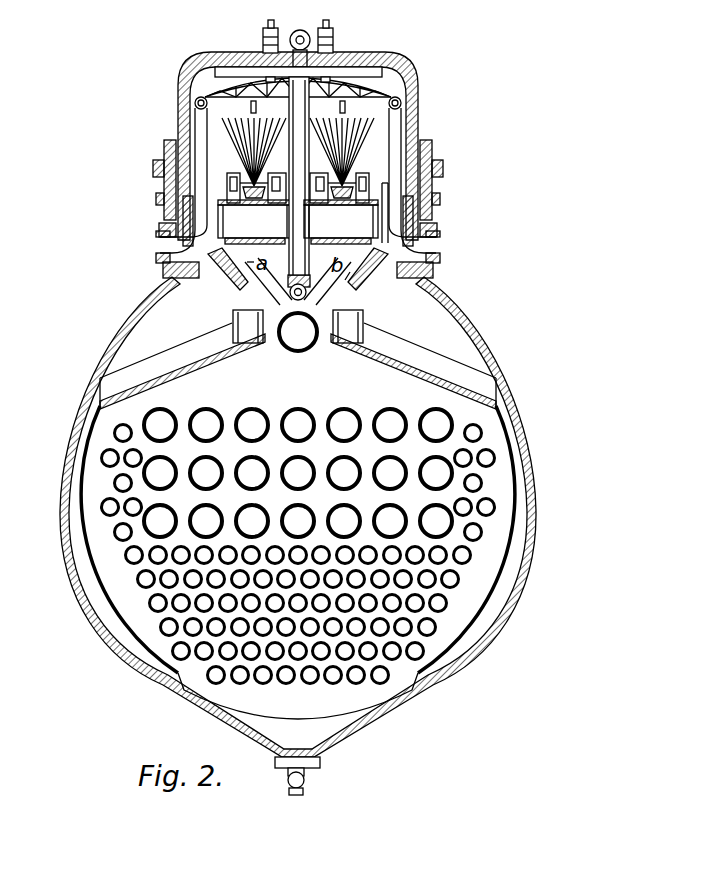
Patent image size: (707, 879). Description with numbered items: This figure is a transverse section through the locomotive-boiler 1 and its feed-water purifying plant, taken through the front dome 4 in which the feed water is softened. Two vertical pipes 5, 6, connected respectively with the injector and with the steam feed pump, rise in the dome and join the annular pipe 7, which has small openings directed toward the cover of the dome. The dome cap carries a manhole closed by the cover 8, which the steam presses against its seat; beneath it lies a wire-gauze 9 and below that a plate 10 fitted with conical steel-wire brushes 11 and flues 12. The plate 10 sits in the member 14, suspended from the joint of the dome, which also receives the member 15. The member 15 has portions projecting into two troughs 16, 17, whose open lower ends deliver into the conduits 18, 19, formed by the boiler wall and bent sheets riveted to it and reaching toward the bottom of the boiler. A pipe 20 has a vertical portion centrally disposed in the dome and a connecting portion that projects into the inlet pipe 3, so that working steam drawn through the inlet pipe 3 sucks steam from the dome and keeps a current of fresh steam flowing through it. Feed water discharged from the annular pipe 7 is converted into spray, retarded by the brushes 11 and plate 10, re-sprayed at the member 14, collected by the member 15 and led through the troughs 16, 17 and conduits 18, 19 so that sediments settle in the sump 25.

The locomotive-boiler 1 is at (478, 346).
The inlet pipe 3 is at (304, 351).
The front dome 4 is at (440, 170).
The vertical pipe 5 is at (430, 244).
The vertical pipe 6 is at (172, 244).
The annular pipe 7 is at (232, 100).
The cover 8 is at (262, 54).
The wire-gauze 9 is at (398, 92).
The plate 10 is at (336, 200).
The conical steel-wire brushes 11 is at (378, 140).
The flues 12 is at (276, 200).
The member 14 is at (390, 228).
The member 15 is at (346, 279).
The trough 16 is at (412, 338).
The trough 17 is at (186, 354).
The conduit 18 is at (516, 523).
The conduit 19 is at (74, 517).
The pipe 20 is at (332, 60).
The sump 25 is at (338, 746).